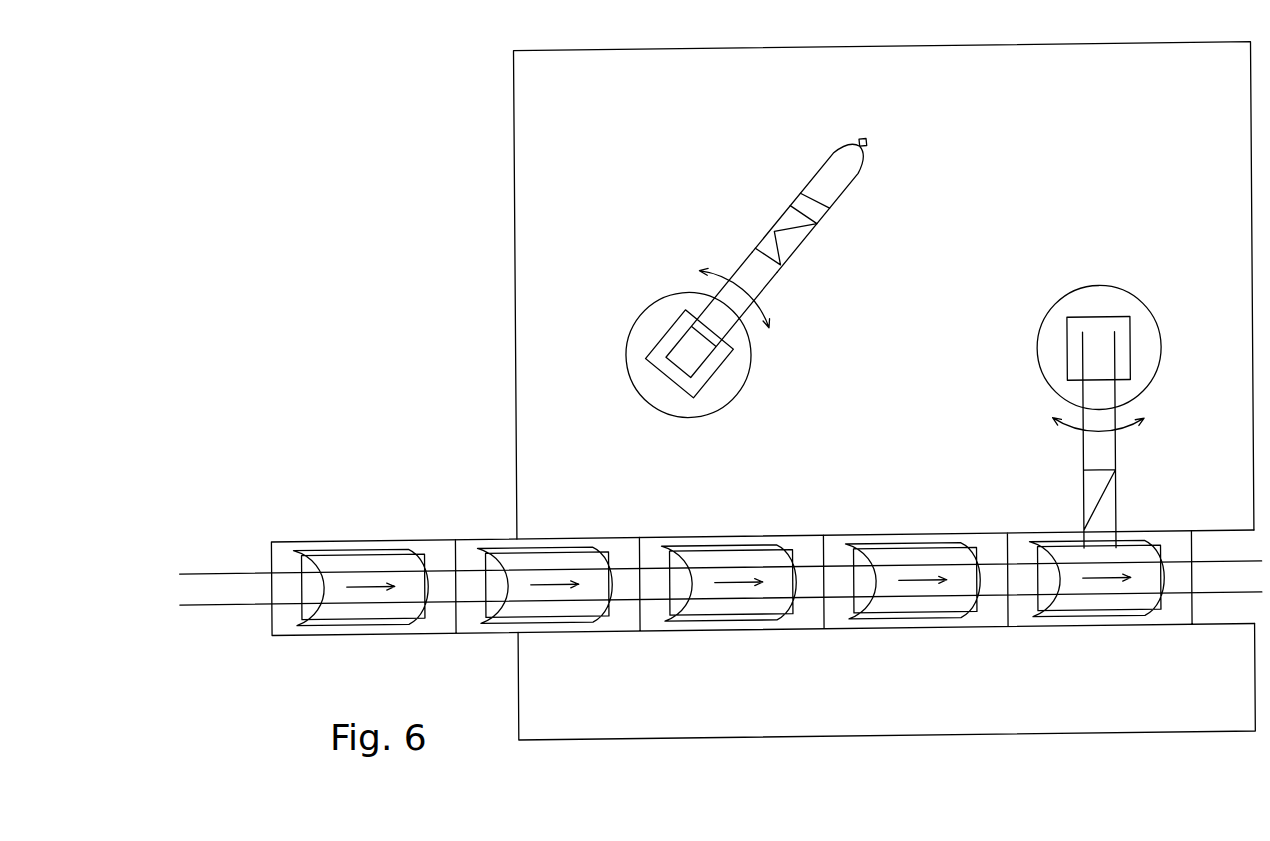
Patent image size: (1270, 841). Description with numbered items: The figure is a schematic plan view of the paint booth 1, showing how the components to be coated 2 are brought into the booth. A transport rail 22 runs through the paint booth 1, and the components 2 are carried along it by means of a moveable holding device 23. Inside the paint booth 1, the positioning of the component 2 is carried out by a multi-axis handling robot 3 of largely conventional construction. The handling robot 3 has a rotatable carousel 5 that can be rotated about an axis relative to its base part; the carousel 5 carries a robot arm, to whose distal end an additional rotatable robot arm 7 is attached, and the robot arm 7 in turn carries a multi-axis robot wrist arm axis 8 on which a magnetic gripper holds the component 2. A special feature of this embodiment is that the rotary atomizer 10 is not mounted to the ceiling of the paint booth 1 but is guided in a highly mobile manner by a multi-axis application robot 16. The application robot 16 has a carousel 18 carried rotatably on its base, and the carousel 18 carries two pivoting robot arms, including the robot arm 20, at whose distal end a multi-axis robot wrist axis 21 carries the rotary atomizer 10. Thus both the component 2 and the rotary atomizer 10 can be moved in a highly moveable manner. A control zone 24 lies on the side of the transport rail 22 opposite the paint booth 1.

The paint booth 1 is at (514, 320).
The component 2 is at (329, 585).
The multi-axis handling robot 3 is at (1069, 401).
The rotatable carousel 5 is at (1100, 310).
The rotatable robot arm 7 is at (1112, 450).
The multi-axis robot wrist arm axis 8 is at (1080, 512).
The rotary atomizer 10 is at (817, 168).
The multi-axis application robot 16 is at (805, 353).
The carousel 18 is at (718, 388).
The pivoting robot arm 20 is at (743, 263).
The multi-axis robot wrist axis 21 is at (787, 240).
The transport rail 22 is at (231, 601).
The moveable holding device 23 is at (466, 539).
The control zone 24 is at (514, 708).